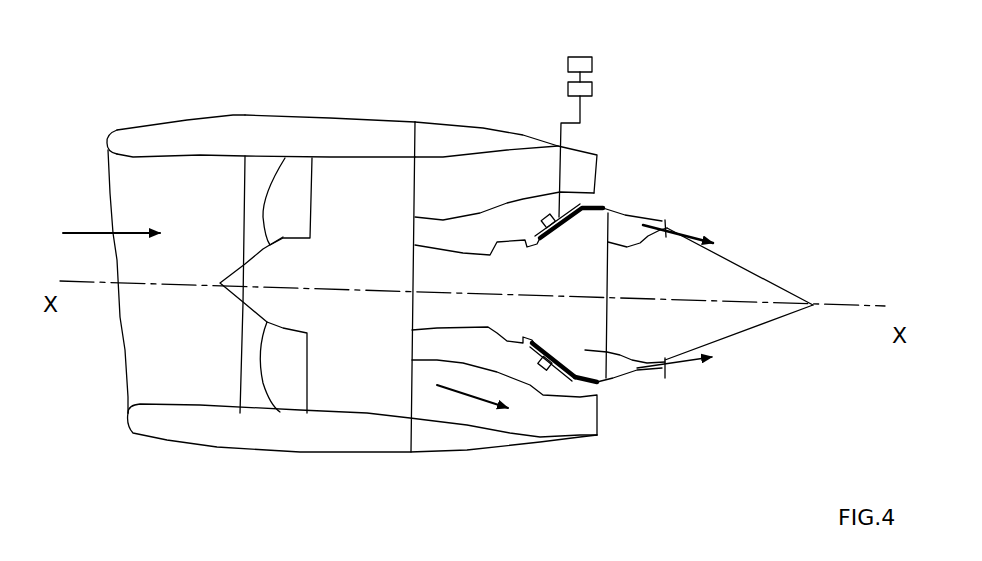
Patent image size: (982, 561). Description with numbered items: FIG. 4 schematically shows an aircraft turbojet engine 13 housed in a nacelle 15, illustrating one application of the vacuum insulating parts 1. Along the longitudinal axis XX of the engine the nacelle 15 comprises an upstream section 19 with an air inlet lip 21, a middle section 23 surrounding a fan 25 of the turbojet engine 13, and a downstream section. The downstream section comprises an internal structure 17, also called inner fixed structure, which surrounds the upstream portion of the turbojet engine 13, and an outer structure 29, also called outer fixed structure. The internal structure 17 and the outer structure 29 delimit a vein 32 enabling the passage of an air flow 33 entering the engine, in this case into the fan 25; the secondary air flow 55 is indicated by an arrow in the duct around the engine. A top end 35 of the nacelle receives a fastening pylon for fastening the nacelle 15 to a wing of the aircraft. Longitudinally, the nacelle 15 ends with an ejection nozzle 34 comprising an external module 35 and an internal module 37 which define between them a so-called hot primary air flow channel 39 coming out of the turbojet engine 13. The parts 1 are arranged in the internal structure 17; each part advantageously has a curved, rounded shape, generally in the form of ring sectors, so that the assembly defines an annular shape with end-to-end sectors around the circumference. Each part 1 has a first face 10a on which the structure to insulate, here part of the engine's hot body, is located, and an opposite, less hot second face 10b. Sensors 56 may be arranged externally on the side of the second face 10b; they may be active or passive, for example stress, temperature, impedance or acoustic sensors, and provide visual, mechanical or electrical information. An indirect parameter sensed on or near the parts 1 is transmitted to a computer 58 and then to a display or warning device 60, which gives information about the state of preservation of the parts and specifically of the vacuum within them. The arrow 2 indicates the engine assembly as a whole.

The insulating part 1 is at (559, 380).
The turbojet engine 2 is at (485, 122).
The first face 10a is at (553, 353).
The second face 10b is at (575, 379).
The turbojet engine 13 is at (590, 243).
The nacelle 15 is at (597, 118).
The internal structure 17 is at (570, 185).
The upstream section 19 is at (160, 147).
The air inlet lip 21 is at (127, 140).
The middle section 23 is at (352, 145).
The fan 25 is at (342, 375).
The outer structure 29 is at (525, 148).
The vein 32 is at (440, 187).
The air flow 33 is at (90, 232).
The ejection nozzle 34 is at (753, 258).
The top end 35 is at (368, 120).
The internal module 37 is at (750, 333).
The hot primary air flow channel 39 is at (680, 233).
The secondary air flow 55 is at (467, 400).
The sensor 56 is at (542, 370).
The computer 58 is at (595, 87).
The display or warning device 60 is at (595, 62).